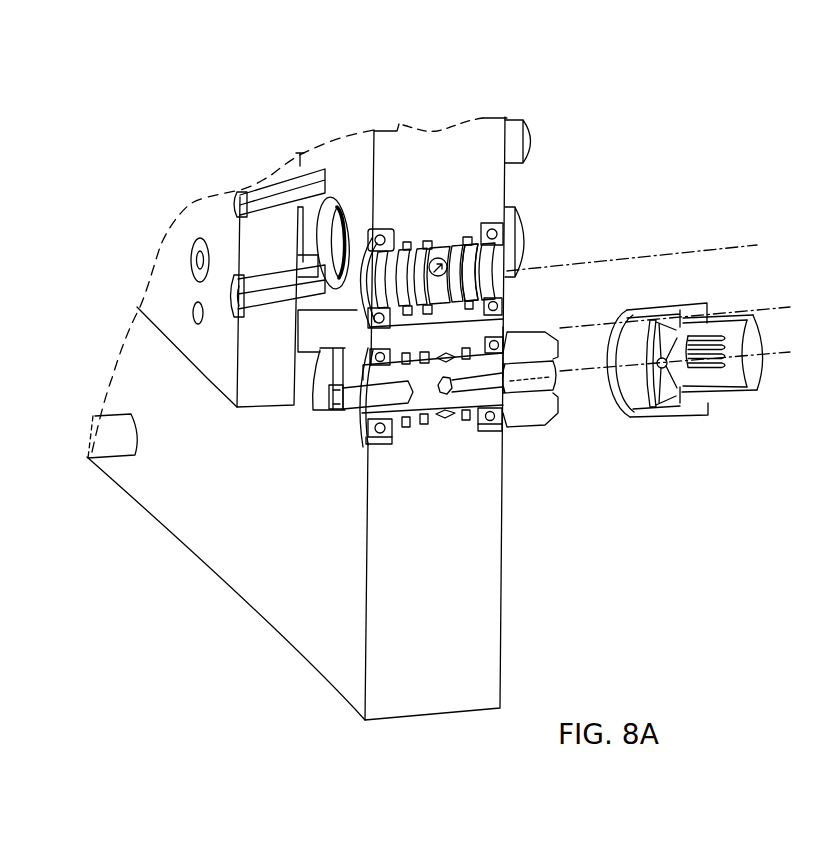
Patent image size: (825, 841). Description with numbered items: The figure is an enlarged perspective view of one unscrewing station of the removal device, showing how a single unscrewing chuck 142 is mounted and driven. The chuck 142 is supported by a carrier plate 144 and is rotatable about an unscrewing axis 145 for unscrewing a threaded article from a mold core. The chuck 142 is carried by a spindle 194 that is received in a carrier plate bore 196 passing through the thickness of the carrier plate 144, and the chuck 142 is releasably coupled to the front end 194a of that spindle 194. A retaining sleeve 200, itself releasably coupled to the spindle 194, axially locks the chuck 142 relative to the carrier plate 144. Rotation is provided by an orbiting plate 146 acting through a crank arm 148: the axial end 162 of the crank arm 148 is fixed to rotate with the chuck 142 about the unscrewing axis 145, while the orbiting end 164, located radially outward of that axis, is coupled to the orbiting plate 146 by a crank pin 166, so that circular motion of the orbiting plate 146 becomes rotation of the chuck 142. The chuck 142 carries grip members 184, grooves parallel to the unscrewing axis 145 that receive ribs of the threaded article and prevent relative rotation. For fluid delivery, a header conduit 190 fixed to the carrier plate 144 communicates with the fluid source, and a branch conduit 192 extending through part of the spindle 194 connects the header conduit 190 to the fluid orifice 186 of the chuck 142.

The unscrewing chuck 142 is at (747, 394).
The carrier plate 144 is at (478, 617).
The unscrewing axis 145 is at (778, 352).
The orbiting plate 146 is at (260, 397).
The crank arm 148 is at (346, 335).
The axial end 162 is at (352, 409).
The orbiting end 164 is at (307, 262).
The crank pin 166 is at (237, 299).
The grip member 184 is at (728, 323).
The fluid orifice 186 is at (643, 382).
The header conduit 190 is at (495, 292).
The branch conduit 192 is at (448, 388).
The spindle 194 is at (417, 406).
The front end of the spindle 194a is at (557, 413).
The carrier plate bore 196 is at (497, 289).
The retaining sleeve 200 is at (647, 318).